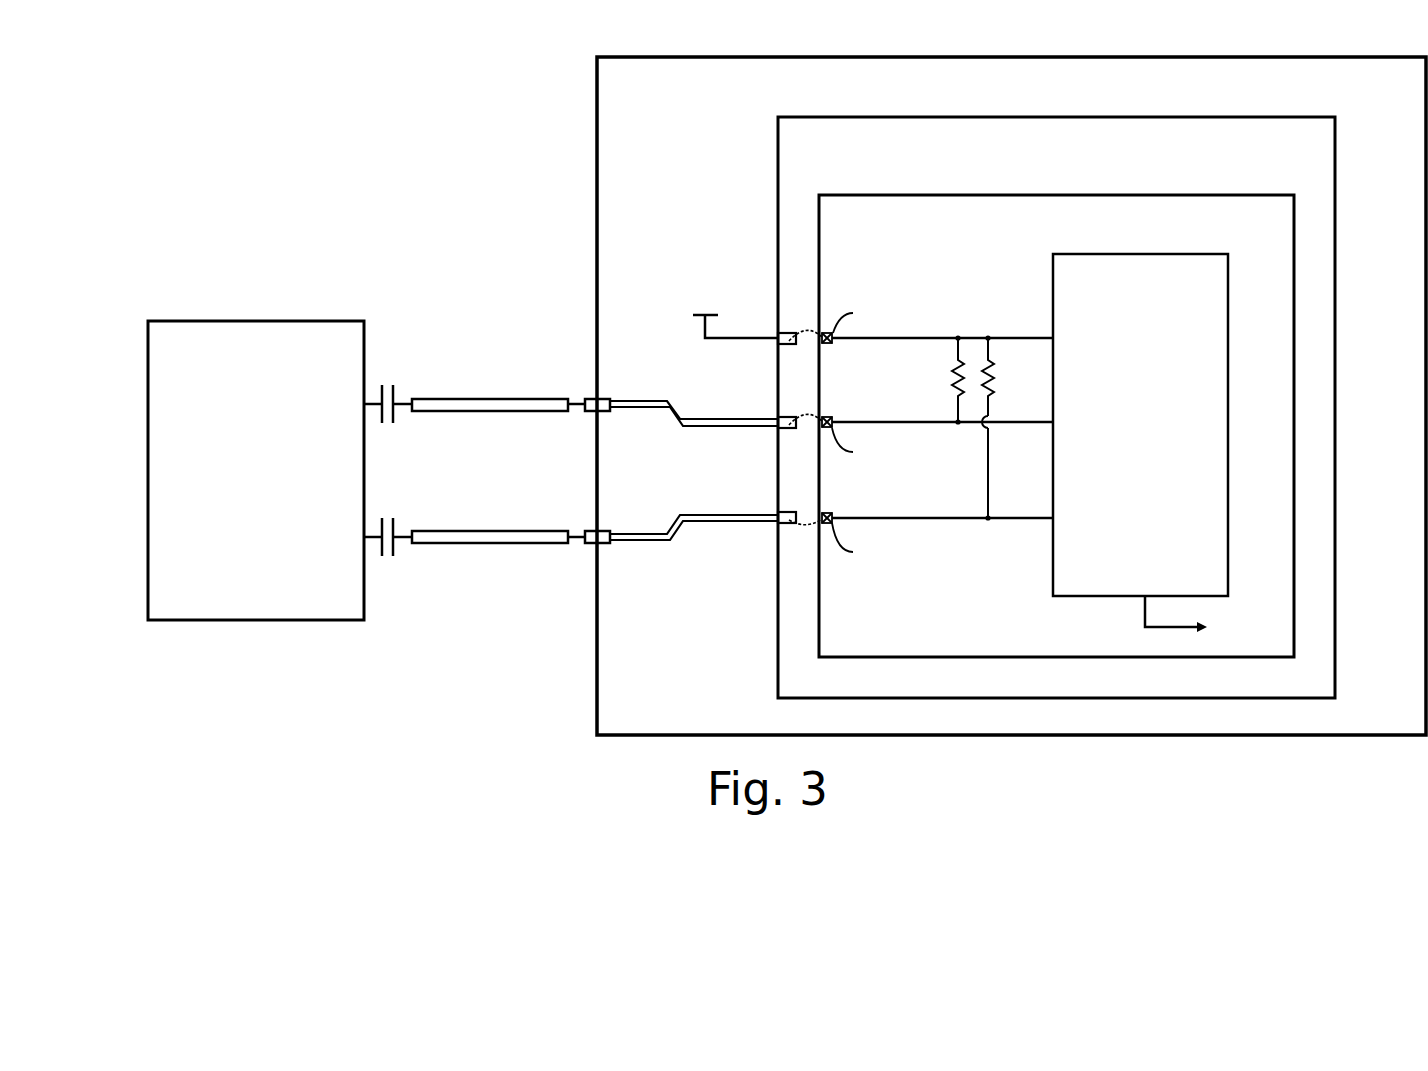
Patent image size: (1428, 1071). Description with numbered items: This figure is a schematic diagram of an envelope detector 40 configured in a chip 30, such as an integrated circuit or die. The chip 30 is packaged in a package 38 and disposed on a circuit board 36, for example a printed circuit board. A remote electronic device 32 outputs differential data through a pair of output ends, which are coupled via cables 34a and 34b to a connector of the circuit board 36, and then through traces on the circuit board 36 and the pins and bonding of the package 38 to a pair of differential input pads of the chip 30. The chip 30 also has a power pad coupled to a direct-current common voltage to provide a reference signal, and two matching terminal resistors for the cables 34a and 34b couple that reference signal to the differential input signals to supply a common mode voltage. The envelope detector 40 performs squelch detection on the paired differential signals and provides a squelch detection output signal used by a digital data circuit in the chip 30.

The chip 30 is at (1002, 195).
The remote electronic device 32 is at (274, 321).
The cable 34a is at (462, 399).
The cable 34b is at (467, 530).
The circuit board 36 is at (688, 57).
The package 38 is at (1337, 150).
The envelope detector 40 is at (1120, 254).